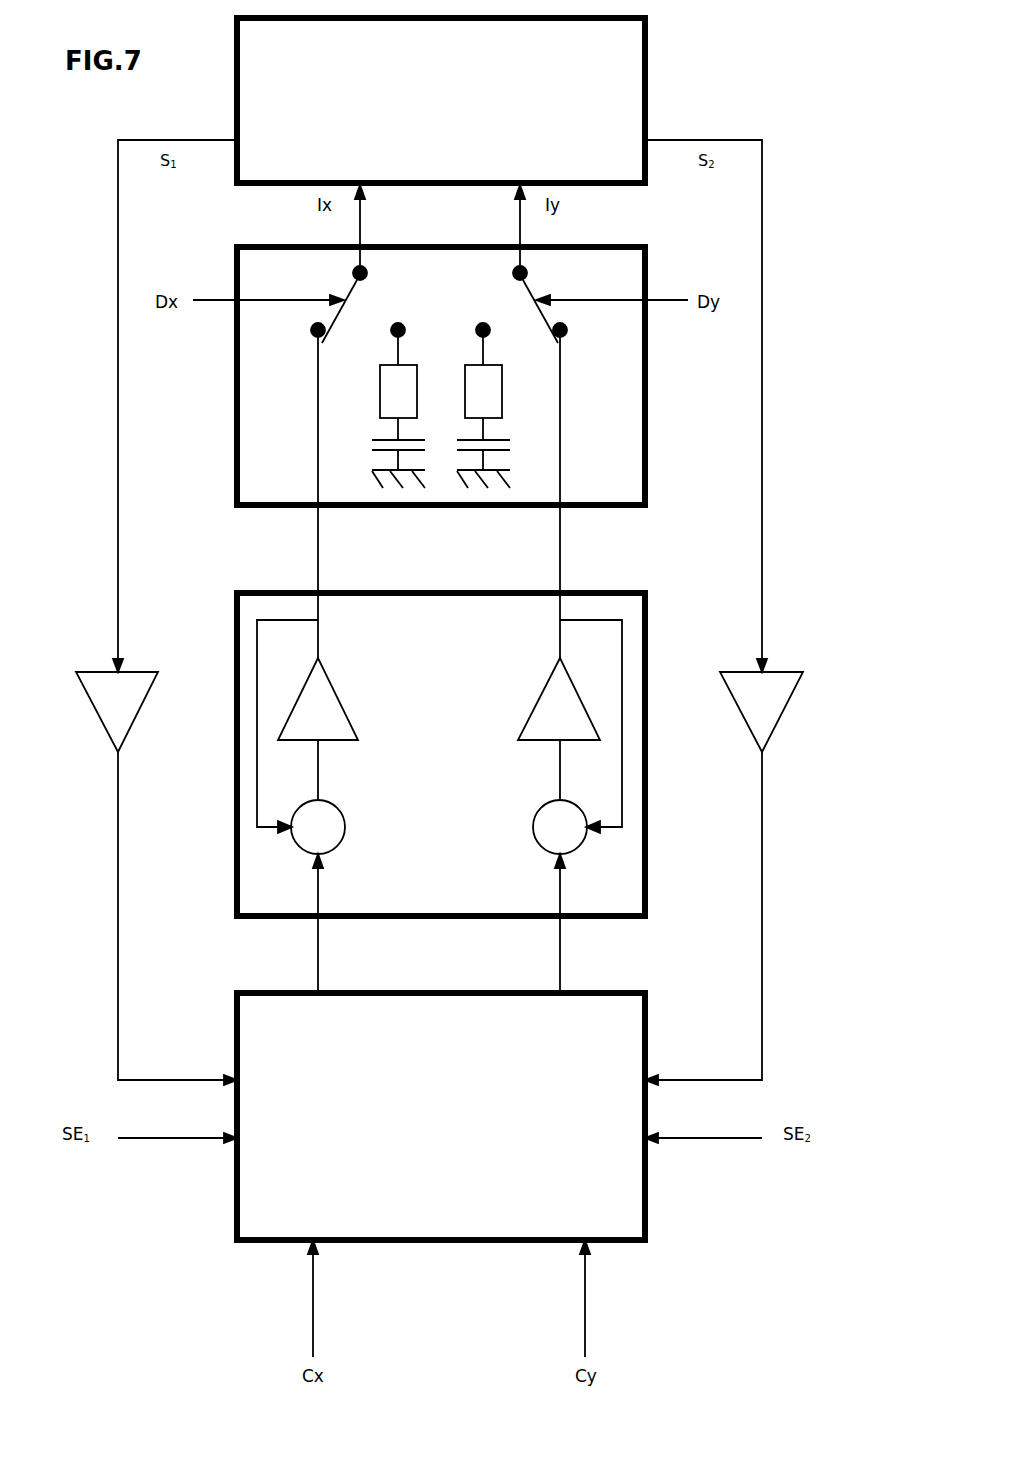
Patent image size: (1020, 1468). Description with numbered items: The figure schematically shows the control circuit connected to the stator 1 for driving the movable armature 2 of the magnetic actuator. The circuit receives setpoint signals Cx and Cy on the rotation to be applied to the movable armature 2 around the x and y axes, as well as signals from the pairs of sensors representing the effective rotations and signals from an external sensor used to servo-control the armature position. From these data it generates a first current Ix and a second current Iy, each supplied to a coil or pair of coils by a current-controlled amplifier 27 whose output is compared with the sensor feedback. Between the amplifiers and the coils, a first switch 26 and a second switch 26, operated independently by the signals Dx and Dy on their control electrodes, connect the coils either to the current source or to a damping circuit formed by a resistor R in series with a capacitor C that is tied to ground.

The stator 1 is at (441, 100).
The movable armature 2 is at (441, 100).
The switch 26 is at (503, 305).
The current-controlled amplifier 27 is at (362, 690).